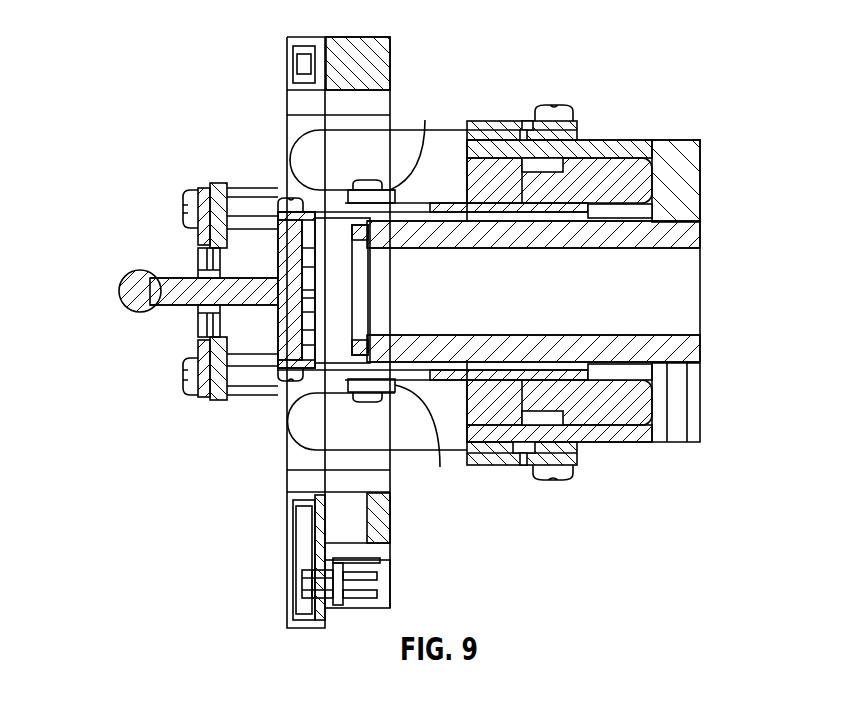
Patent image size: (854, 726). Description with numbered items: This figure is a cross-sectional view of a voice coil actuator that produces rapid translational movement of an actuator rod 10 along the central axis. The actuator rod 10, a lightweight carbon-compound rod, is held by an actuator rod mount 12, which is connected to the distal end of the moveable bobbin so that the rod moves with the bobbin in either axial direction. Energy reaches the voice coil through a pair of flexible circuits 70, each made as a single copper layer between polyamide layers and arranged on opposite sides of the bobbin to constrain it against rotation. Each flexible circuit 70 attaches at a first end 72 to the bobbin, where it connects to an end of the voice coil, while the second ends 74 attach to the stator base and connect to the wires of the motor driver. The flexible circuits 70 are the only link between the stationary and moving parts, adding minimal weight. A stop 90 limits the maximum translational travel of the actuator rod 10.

The actuator rod 10 is at (120, 283).
The actuator rod mount 12 is at (285, 372).
The flexible circuits 70 is at (453, 127).
The first end 72 is at (432, 294).
The second ends 74 is at (577, 133).
The stop 90 is at (207, 352).